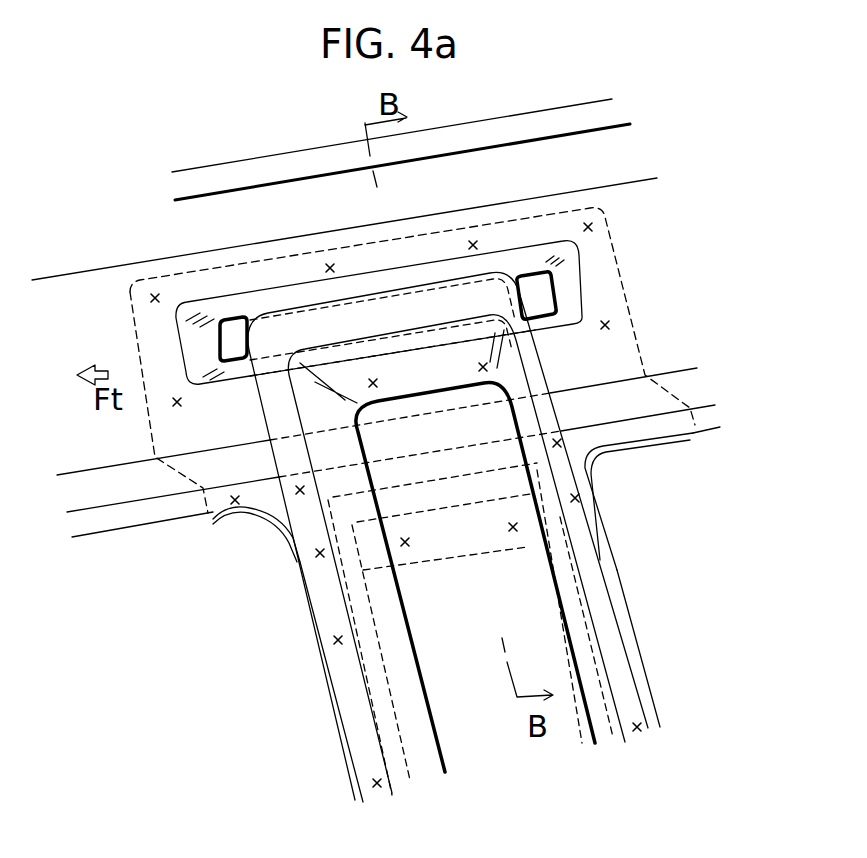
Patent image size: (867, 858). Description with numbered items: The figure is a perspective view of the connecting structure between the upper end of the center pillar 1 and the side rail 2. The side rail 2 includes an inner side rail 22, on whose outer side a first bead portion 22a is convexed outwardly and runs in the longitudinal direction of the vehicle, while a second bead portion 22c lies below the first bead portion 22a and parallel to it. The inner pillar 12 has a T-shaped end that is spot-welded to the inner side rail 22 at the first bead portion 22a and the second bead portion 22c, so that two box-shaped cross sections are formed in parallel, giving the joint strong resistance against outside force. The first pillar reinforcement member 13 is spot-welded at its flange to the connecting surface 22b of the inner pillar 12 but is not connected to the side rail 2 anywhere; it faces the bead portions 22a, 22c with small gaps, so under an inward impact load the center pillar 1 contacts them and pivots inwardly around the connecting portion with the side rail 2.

The center pillar 1 is at (656, 640).
The side rail 2 is at (122, 554).
The inner pillar 12 is at (330, 681).
The first pillar reinforcement member 13 is at (530, 610).
The inner side rail 22 is at (108, 453).
The first bead portion 22a is at (535, 277).
The connecting surface 22b is at (285, 538).
The second bead portion 22c is at (437, 470).